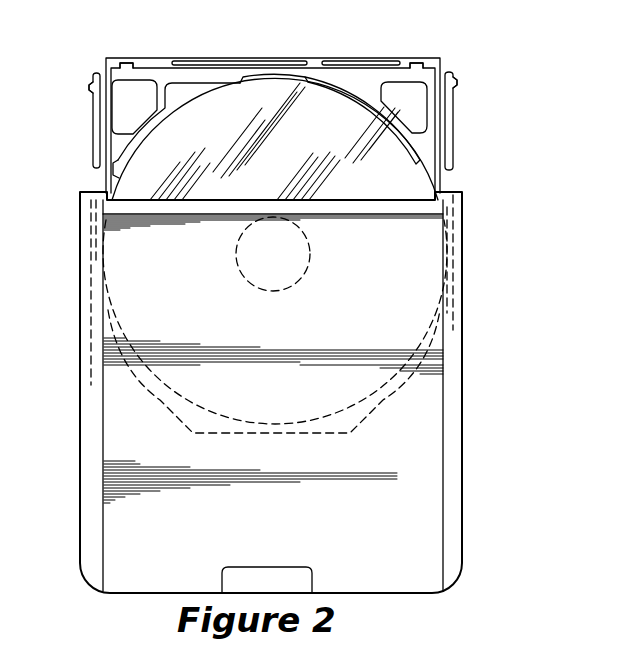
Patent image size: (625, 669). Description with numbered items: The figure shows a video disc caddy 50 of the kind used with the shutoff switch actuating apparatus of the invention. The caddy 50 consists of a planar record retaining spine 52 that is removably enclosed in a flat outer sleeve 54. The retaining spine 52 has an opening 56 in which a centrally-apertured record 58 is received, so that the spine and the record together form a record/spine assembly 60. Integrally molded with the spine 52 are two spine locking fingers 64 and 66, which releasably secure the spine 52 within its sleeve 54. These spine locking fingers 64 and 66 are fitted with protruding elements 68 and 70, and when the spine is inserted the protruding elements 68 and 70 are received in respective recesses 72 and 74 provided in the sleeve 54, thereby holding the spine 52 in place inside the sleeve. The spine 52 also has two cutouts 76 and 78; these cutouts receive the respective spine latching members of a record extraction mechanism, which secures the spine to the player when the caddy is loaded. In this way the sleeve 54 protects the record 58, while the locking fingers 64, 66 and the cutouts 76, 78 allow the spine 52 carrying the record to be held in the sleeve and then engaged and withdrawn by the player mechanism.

The caddy 50 is at (472, 182).
The record retaining spine 52 is at (193, 72).
The outer sleeve 54 is at (433, 462).
The opening 56 is at (418, 150).
The record 58 is at (125, 177).
The record/spine assembly 60 is at (462, 60).
The spine locking finger 64 is at (93, 122).
The spine locking finger 66 is at (453, 132).
The protruding element 68 is at (90, 88).
The protruding element 70 is at (457, 87).
The recess 72 is at (88, 212).
The recess 74 is at (453, 215).
The cutout 76 is at (134, 62).
The cutout 78 is at (416, 62).